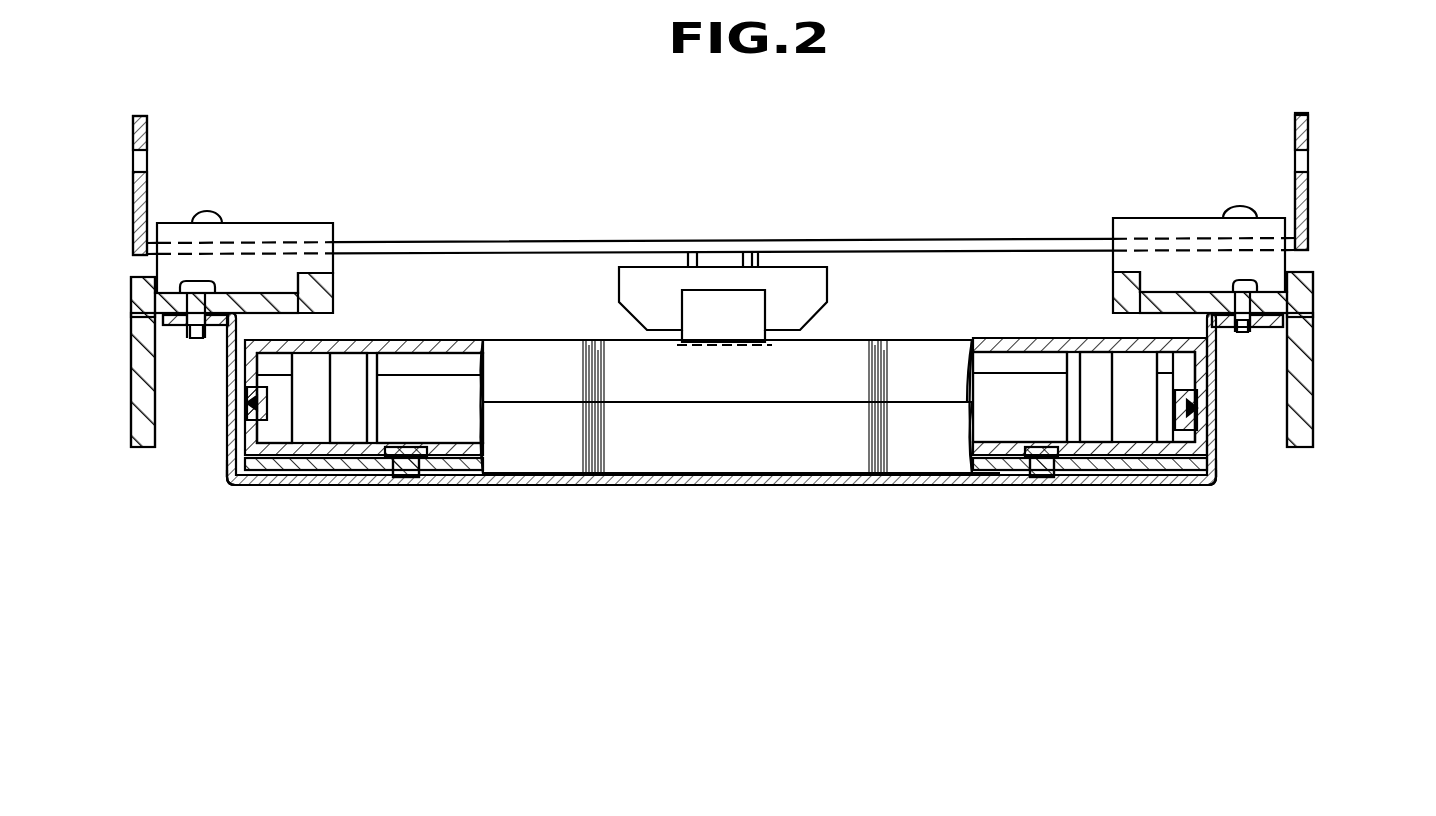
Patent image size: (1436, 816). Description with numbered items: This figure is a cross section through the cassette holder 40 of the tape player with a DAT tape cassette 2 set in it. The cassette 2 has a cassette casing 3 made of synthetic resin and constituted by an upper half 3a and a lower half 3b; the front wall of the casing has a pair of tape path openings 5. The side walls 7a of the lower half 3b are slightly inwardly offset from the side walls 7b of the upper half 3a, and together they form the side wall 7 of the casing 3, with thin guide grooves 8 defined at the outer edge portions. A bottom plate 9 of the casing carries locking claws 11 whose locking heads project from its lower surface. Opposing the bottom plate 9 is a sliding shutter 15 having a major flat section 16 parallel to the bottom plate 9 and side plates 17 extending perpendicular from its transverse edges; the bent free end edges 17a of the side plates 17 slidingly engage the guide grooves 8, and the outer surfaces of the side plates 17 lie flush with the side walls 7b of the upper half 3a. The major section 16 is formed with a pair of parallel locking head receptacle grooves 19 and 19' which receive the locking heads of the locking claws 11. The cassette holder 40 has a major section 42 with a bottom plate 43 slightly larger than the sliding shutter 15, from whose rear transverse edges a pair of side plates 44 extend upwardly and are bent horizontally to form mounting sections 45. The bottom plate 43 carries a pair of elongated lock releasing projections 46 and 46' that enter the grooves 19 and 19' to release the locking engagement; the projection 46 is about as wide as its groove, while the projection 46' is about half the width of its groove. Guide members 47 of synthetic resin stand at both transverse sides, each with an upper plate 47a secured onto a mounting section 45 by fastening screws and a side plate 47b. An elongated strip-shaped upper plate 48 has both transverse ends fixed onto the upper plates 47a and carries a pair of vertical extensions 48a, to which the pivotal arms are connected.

The tape cassette 2 is at (921, 336).
The cassette casing 3 is at (836, 540).
The upper half 3a is at (823, 390).
The lower half 3b is at (763, 458).
The tape path openings 5 is at (326, 372).
The side wall 7 is at (227, 385).
The side walls of the lower half 7a is at (227, 460).
The side walls of the upper half 7b is at (236, 413).
The guide grooves 8 is at (273, 410).
The bottom plate 9 is at (487, 427).
The locking claws 11 is at (403, 447).
The sliding shutter 15 is at (223, 480).
The major flat section 16 is at (325, 480).
The side plates 17 is at (227, 442).
The free end edges 17a is at (258, 392).
The locking head receptacle groove 19 is at (400, 503).
The locking head receptacle groove 19' is at (1029, 501).
The cassette holder 40 is at (1317, 281).
The major section 42 is at (1212, 544).
The bottom plate 43 is at (943, 485).
The side plates 44 is at (226, 353).
The mounting sections 45 is at (190, 322).
The lock releasing projection 46 is at (420, 435).
The lock releasing projection 46' is at (1038, 435).
The guide members 47 is at (131, 421).
The upper plate 47a is at (332, 303).
The side plate 47b is at (152, 340).
The upper plate 48 is at (887, 239).
The vertical extensions 48a is at (133, 196).